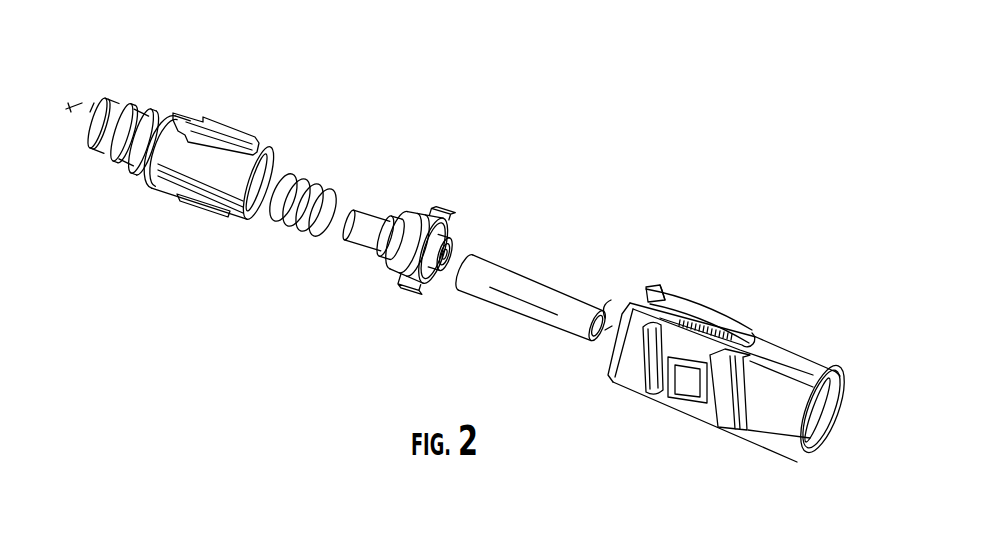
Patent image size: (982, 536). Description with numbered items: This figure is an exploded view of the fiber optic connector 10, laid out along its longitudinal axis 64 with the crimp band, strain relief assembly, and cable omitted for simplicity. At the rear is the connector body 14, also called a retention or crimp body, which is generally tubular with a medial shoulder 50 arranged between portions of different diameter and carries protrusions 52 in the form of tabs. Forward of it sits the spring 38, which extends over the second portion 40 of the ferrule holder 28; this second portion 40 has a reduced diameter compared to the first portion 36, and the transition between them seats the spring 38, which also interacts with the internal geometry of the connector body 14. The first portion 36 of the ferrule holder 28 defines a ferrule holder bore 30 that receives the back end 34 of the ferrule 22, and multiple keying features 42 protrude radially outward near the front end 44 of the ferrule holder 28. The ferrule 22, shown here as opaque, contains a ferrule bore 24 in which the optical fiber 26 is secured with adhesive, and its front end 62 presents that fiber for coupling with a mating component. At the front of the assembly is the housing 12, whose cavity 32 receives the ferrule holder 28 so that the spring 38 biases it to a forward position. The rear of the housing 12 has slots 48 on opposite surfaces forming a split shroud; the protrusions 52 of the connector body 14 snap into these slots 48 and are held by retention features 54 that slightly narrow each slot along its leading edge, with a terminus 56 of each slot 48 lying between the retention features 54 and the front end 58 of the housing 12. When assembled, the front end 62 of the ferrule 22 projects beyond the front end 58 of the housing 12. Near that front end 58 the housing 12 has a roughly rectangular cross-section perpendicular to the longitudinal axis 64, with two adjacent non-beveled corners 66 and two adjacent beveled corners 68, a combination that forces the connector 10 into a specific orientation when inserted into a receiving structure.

The connector 10 is at (464, 270).
The housing 12 is at (733, 371).
The connector body 14 is at (336, 221).
The ferrule 22 is at (524, 294).
The ferrule bore 24 is at (603, 332).
The optical fiber 26 is at (76, 96).
The ferrule holder 28 is at (388, 247).
The ferrule holder bore 30 is at (448, 275).
The cavity 32 is at (825, 437).
The back end 34 is at (467, 252).
The first portion 36 is at (388, 270).
The spring 38 is at (300, 184).
The second portion 40 is at (350, 243).
The keying features 42 is at (436, 214).
The front end 44 is at (441, 284).
The slots 48 is at (700, 324).
The medial shoulder 50 is at (158, 112).
The protrusions 52 is at (232, 137).
The retention features 54 is at (655, 290).
The terminus 56 is at (740, 333).
The front end 58 is at (846, 383).
The front end 62 is at (588, 336).
The longitudinal axis 64 is at (90, 112).
The non-beveled corners 66 is at (803, 453).
The beveled corners 68 is at (838, 370).